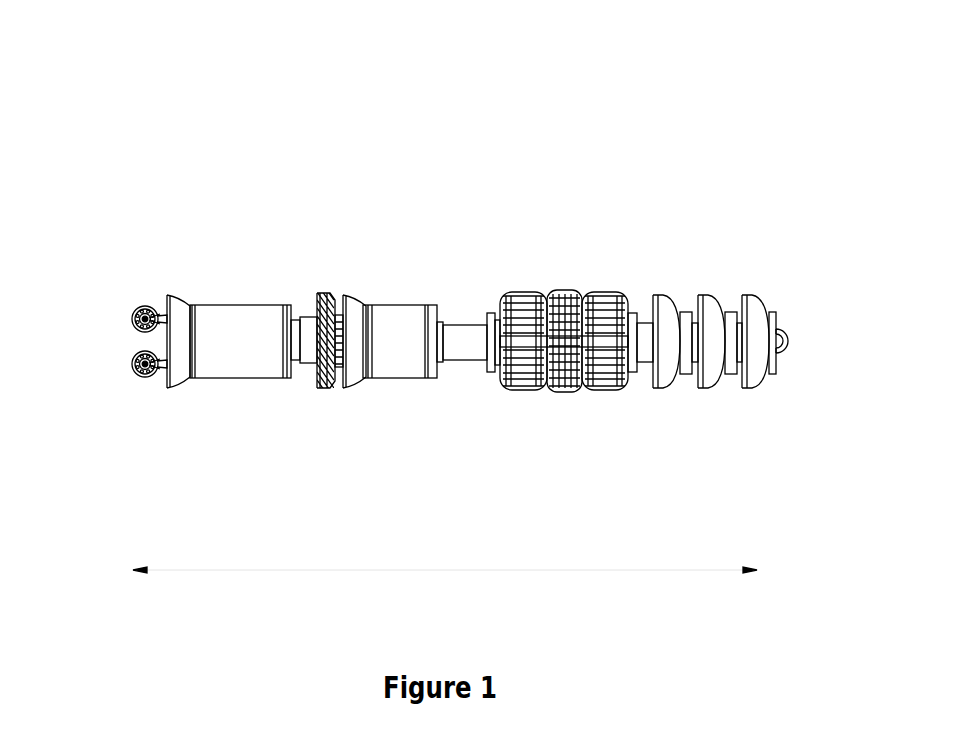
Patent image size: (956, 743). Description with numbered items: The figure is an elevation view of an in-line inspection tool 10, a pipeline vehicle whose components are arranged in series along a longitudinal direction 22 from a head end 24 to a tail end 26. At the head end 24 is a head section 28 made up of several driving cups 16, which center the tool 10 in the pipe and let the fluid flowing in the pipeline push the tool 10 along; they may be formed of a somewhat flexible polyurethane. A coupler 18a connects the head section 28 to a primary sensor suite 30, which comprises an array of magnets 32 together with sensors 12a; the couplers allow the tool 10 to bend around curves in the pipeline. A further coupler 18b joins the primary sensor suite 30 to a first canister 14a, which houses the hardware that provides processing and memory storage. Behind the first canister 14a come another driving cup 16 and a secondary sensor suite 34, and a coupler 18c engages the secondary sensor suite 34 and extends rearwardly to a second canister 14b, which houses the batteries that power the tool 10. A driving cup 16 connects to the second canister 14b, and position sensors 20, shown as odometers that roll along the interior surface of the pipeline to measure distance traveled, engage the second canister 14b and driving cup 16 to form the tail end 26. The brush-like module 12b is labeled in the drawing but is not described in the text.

The in-line inspection tool 10 is at (375, 80).
The sensors 12a is at (567, 393).
The brush/tread module 12b is at (323, 390).
The first canister 14a is at (436, 277).
The second canister 14b is at (283, 277).
The driving cups 16 is at (173, 387).
The coupler 18a is at (634, 277).
The coupler 18b is at (441, 277).
The coupler 18c is at (312, 277).
The position sensors 20 is at (127, 333).
The longitudinal direction 22 is at (393, 570).
The head end 24 is at (813, 300).
The tail end 26 is at (102, 305).
The head section 28 is at (658, 277).
The primary sensor suite 30 is at (569, 332).
The array of magnets 32 is at (532, 389).
The secondary sensor suite 34 is at (340, 277).